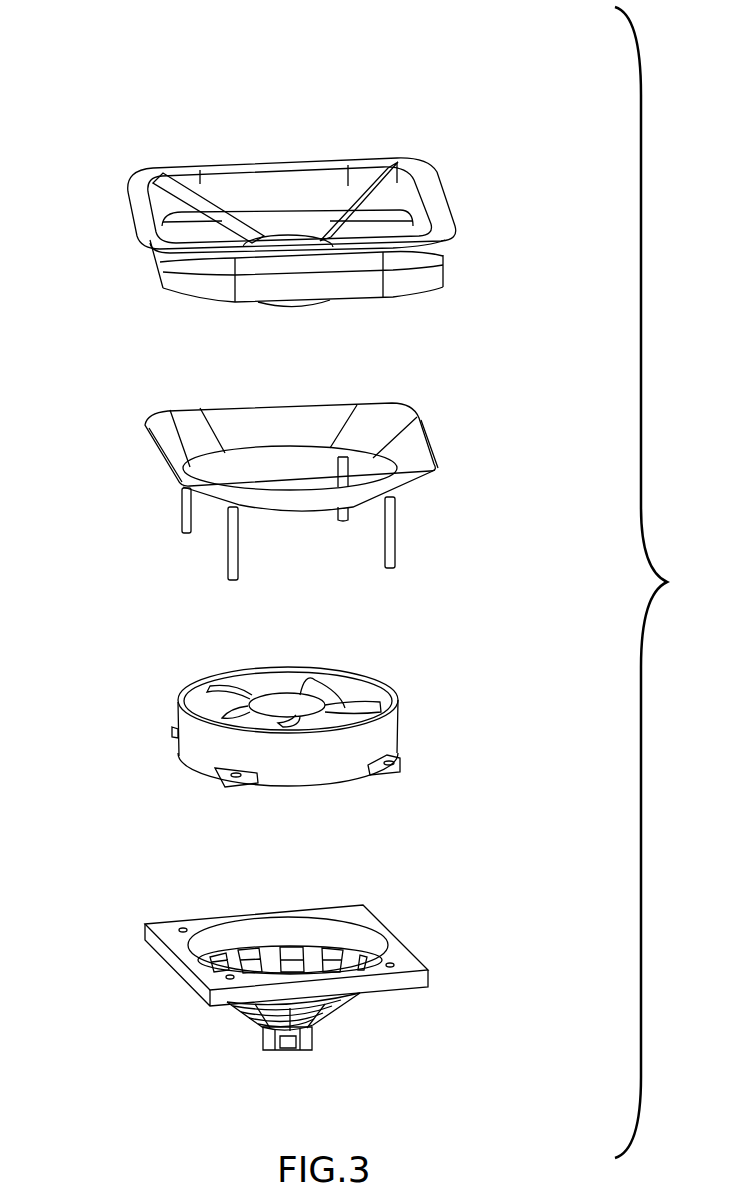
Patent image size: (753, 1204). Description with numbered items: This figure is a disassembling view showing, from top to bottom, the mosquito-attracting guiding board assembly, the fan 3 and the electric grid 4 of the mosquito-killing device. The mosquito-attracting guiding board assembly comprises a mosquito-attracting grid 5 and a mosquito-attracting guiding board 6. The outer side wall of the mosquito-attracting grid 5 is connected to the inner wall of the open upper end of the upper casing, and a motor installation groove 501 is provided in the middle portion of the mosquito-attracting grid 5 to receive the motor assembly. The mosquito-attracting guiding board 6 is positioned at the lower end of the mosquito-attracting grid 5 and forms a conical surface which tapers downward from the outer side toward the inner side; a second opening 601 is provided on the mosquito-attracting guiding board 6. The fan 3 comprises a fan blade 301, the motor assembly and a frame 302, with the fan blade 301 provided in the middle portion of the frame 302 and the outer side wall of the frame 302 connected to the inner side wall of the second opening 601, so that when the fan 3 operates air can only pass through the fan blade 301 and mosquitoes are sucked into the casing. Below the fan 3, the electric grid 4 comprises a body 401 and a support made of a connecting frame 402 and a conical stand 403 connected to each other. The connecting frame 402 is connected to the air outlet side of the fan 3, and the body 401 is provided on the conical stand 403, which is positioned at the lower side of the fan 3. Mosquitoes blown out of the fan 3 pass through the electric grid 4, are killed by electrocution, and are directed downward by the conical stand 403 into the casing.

The fan 3 is at (315, 684).
The fan blade 301 is at (247, 698).
The frame 302 is at (203, 743).
The electric grid 4 is at (328, 991).
The body 401 is at (335, 1013).
The connecting frame 402 is at (167, 930).
The conical stand 403 is at (258, 1023).
The mosquito-attracting grid 5 is at (351, 167).
The motor installation groove 501 is at (295, 240).
The mosquito-attracting guiding board 6 is at (350, 451).
The second opening 601 is at (288, 467).